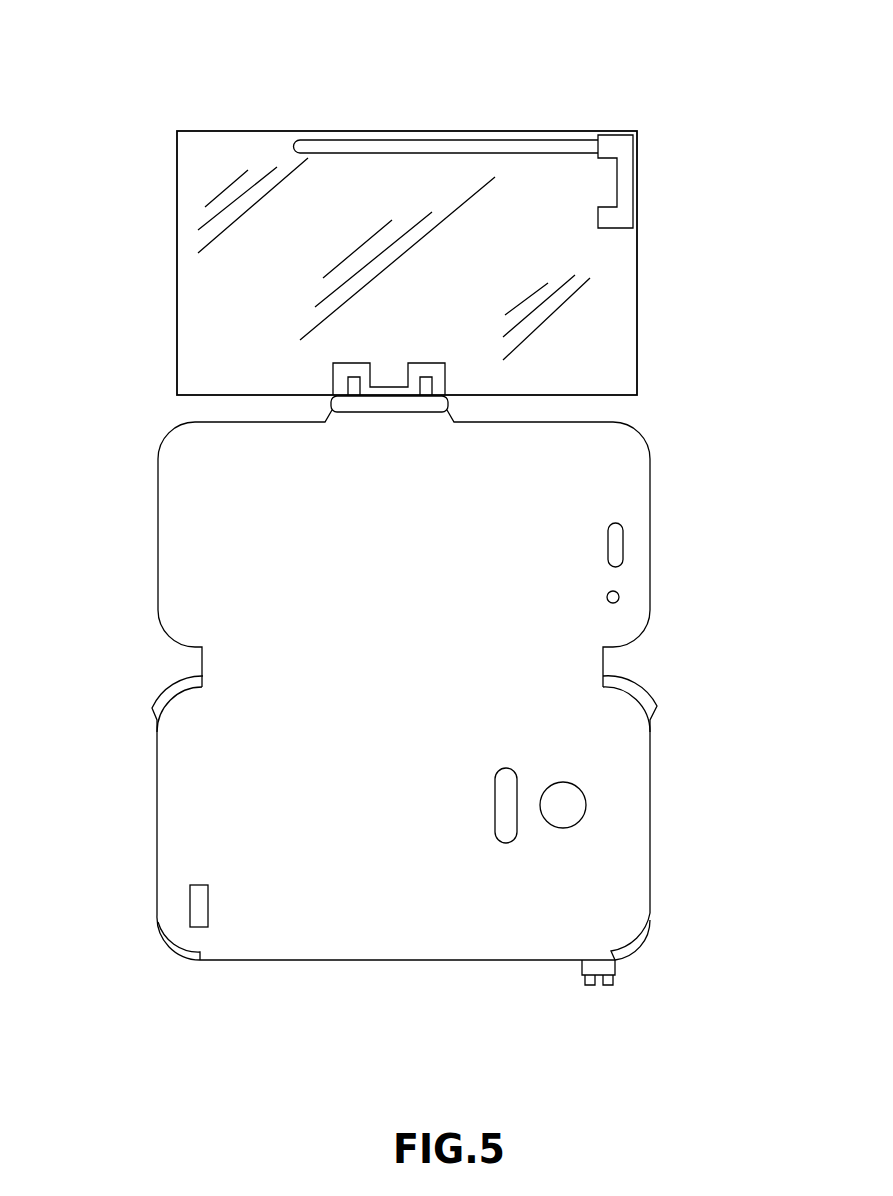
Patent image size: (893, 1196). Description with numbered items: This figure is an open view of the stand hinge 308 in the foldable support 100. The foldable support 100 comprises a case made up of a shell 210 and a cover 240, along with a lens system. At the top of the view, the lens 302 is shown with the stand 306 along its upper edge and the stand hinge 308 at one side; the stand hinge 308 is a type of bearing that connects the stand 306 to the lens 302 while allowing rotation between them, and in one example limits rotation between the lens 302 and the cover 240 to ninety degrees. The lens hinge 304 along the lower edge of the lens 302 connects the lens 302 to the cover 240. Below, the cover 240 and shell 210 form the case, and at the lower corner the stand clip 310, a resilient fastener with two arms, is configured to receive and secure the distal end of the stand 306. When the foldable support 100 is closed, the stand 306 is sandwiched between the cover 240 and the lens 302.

The foldable support 100 is at (219, 121).
The lens 302 is at (198, 163).
The stand 306 is at (390, 140).
The stand hinge 308 is at (637, 190).
The lens hinge 304 is at (332, 407).
The cover 240 is at (158, 571).
The shell 210 is at (158, 812).
The stand clip 310 is at (616, 977).